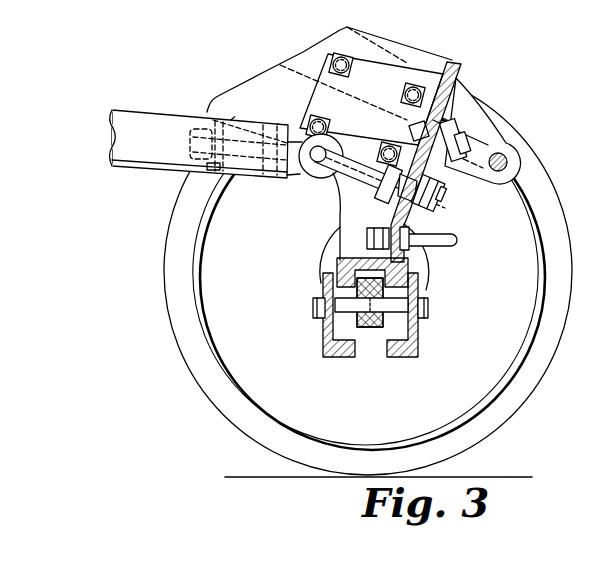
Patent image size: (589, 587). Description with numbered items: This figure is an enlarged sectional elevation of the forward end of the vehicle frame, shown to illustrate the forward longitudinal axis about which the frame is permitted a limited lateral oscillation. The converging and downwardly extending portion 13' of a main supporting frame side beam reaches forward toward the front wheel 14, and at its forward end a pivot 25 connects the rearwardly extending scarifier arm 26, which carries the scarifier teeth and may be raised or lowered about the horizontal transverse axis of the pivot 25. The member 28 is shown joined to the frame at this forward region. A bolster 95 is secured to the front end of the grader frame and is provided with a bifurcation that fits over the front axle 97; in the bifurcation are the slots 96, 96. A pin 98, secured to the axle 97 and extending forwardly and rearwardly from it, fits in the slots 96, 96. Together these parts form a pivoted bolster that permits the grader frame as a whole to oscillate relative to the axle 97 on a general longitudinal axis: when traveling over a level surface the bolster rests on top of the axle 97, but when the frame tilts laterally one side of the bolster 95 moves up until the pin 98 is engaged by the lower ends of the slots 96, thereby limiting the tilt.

The converging and downwardly extending portion 13' is at (329, 101).
The wheel 14 is at (203, 378).
The pivot 25 is at (500, 154).
The scarifier arm 26 is at (382, 54).
The tubular arm 28 is at (140, 123).
The bolster 95 is at (348, 215).
The slot 96 is at (337, 330).
The axle 97 is at (372, 328).
The pin 98 is at (393, 302).